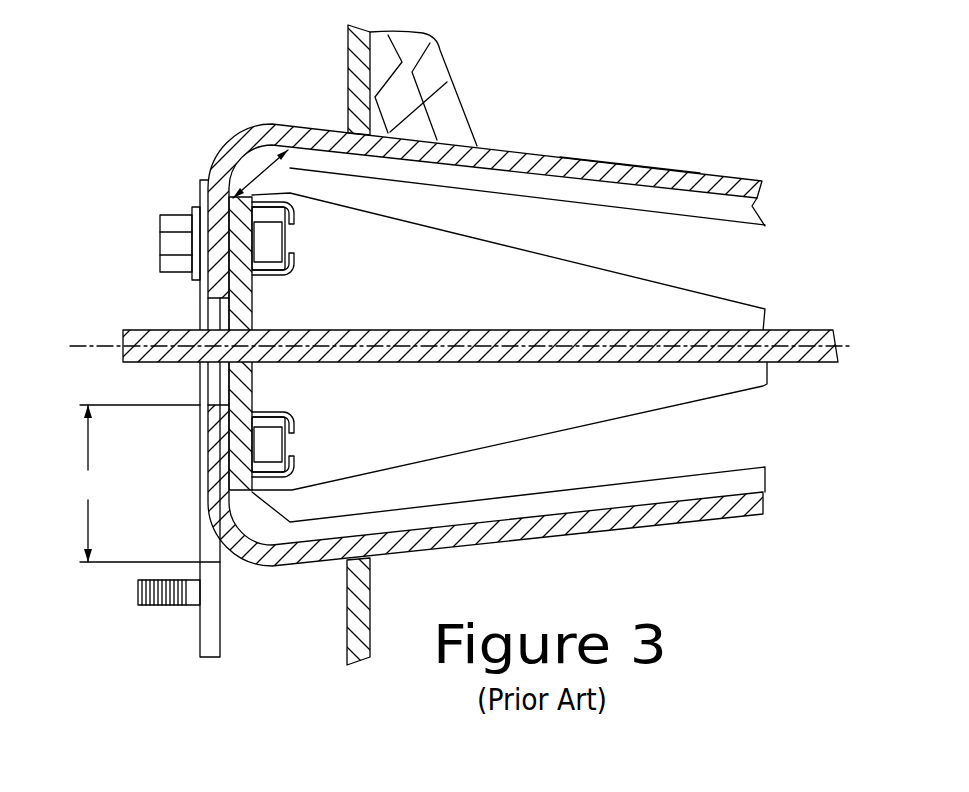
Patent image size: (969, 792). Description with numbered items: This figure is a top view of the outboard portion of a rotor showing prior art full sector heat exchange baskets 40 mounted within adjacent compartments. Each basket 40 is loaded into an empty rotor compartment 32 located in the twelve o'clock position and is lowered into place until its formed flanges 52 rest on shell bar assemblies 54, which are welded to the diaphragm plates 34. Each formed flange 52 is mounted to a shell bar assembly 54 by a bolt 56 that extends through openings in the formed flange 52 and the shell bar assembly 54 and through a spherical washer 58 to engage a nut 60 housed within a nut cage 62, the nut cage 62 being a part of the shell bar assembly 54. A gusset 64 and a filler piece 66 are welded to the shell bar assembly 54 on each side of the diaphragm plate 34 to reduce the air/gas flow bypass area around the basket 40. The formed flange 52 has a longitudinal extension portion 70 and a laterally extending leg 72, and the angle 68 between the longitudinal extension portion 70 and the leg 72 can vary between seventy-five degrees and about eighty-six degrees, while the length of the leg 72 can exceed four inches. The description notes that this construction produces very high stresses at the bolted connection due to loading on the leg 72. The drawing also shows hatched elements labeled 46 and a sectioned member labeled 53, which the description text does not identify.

The rotor compartment 32 is at (616, 96).
The diaphragm plate 34 is at (128, 333).
The basket 40 is at (252, 72).
The panel 46 is at (348, 45).
The formed flange 52 is at (505, 152).
The weld 53 is at (435, 78).
The shell bar assembly 54 is at (252, 312).
The bolt 56 is at (160, 243).
The spherical washer 58 is at (197, 210).
The nut 60 is at (282, 257).
The nut cage 62 is at (298, 220).
The gusset 64 is at (462, 298).
The filler piece 66 is at (614, 248).
The angle 68 is at (290, 170).
The longitudinal extension portion 70 is at (630, 165).
The laterally extending leg 72 is at (218, 462).